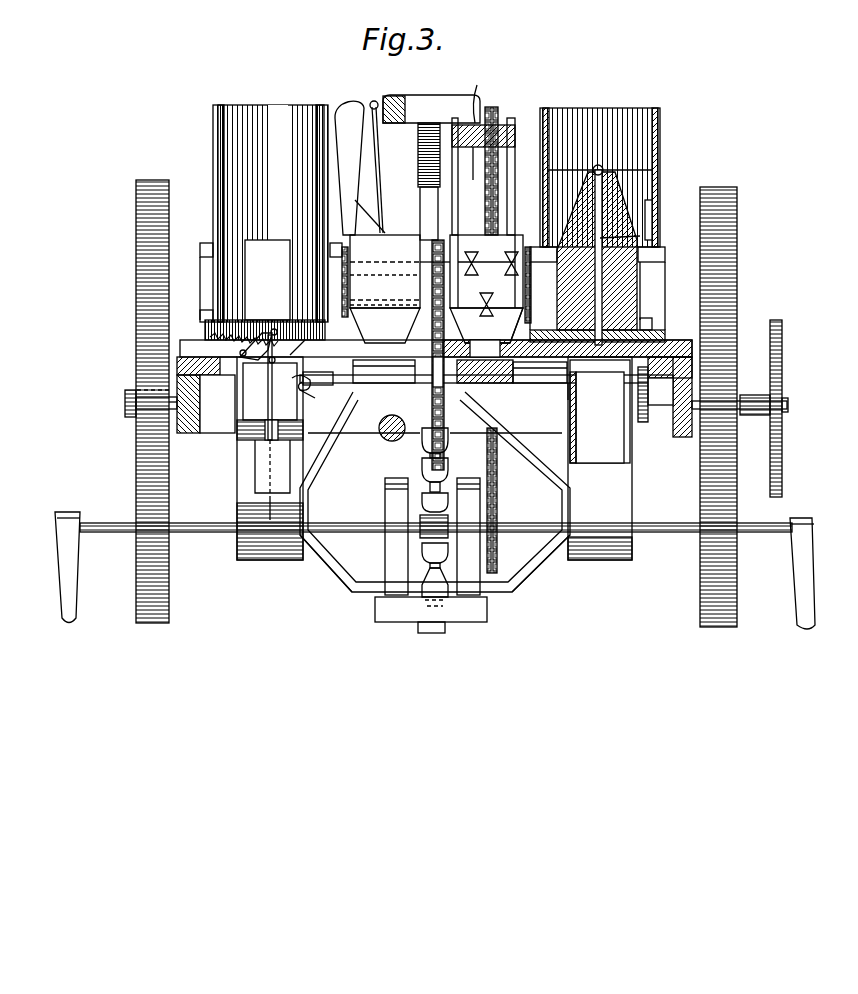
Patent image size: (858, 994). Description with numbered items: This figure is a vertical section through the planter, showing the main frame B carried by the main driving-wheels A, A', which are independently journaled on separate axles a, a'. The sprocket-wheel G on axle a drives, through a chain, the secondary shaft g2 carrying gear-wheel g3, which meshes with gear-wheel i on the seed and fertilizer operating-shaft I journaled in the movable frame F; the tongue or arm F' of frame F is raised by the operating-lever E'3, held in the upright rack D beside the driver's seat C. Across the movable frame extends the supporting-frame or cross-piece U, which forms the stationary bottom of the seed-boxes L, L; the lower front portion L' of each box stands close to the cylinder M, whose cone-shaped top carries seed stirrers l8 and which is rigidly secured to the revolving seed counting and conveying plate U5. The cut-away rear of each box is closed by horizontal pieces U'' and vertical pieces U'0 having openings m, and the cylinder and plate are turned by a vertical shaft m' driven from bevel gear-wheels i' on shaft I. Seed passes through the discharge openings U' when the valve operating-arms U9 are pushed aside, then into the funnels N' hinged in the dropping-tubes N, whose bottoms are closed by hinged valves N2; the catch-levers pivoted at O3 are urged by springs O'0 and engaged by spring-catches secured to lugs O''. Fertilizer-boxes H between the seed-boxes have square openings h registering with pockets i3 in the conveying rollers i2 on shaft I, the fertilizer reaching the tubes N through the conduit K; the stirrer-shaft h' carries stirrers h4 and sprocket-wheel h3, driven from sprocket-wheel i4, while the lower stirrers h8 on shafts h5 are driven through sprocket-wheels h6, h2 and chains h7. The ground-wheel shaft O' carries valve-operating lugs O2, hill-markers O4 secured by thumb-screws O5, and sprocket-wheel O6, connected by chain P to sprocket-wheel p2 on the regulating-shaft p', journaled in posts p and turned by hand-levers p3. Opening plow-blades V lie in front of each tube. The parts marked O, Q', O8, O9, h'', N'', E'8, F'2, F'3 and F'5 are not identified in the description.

The main driving-wheel A' is at (132, 401).
The main driving-wheel A is at (731, 407).
The seed-box L is at (436, 200).
The lower front portion of seed-box L' is at (267, 280).
The revolving seed counting and conveying plate U5 is at (206, 328).
The spring O'0 is at (244, 323).
The horizontal piece U'' is at (430, 242).
The vertical piece U'0 is at (419, 293).
The opening m is at (425, 315).
The cylinder M is at (630, 226).
The vertical shaft m' is at (642, 236).
The seed stirrer l8 is at (602, 172).
The operating-arm U9 is at (648, 200).
The driver's seat C is at (431, 95).
The operating-lever E'3 is at (413, 181).
The sprocket-wheel h3 is at (434, 342).
The upright rack D is at (349, 168).
The sprocket-wheel h2 is at (446, 167).
The upright post p is at (491, 176).
The ground-wheel-regulating shaft p' is at (492, 118).
The sprocket-wheel p2 is at (497, 156).
The hand-lever p3 is at (474, 133).
The fertilizer-box H is at (436, 289).
The stirrer-shaft h' is at (446, 258).
The stirrer h4 is at (488, 284).
The stirrer h'' is at (486, 281).
The sprocket-chain h7 is at (448, 288).
The shaft h5 is at (414, 311).
The revolving stirrer h8 is at (428, 333).
The sprocket-wheel h6 is at (518, 325).
The seed-discharge opening U' is at (431, 285).
The supporting-frame or cross-piece U is at (436, 349).
The square opening h is at (485, 348).
The movable frame F is at (162, 395).
The tongue or arm F' is at (686, 397).
The main frame B is at (222, 433).
The fertilizer and seed dropping and mixing tube N is at (418, 458).
The housing part N'' is at (417, 428).
The hinged valve N2 is at (434, 543).
The opening plow-blade V is at (262, 462).
The sprocket-wheel O6 is at (273, 397).
The rod O8 is at (272, 476).
The valve-operating lug O2 is at (266, 384).
The pivot of catch-lever O3 is at (223, 352).
The ground-wheel shaft O' is at (281, 353).
The hill-marker O4 is at (60, 561).
The thumb-screw O5 is at (304, 372).
The link O9 is at (313, 396).
The lug O'' is at (320, 383).
The gear-wheel i is at (486, 390).
The seed and fertilizer operating-shaft I is at (540, 385).
The fertilizer-conveying roller i2 is at (460, 390).
The square pocket i3 is at (540, 372).
The sprocket-wheel i4 is at (432, 388).
The bevel gear-wheel i' is at (581, 392).
The movable seed-discharging funnel N' is at (600, 411).
The gear-wheel g3 is at (658, 414).
The axle a is at (740, 394).
The secondary shaft g2 is at (752, 416).
The sprocket-wheel G is at (782, 342).
The axle a' is at (138, 403).
The spout or conduit K is at (334, 456).
The shaft E'8 is at (382, 440).
The cone O is at (424, 517).
The shaft Q' is at (436, 519).
The bar F'5 is at (432, 536).
The box F'2 is at (431, 615).
The brace F'3 is at (435, 565).
The sprocket-chain P is at (499, 500).